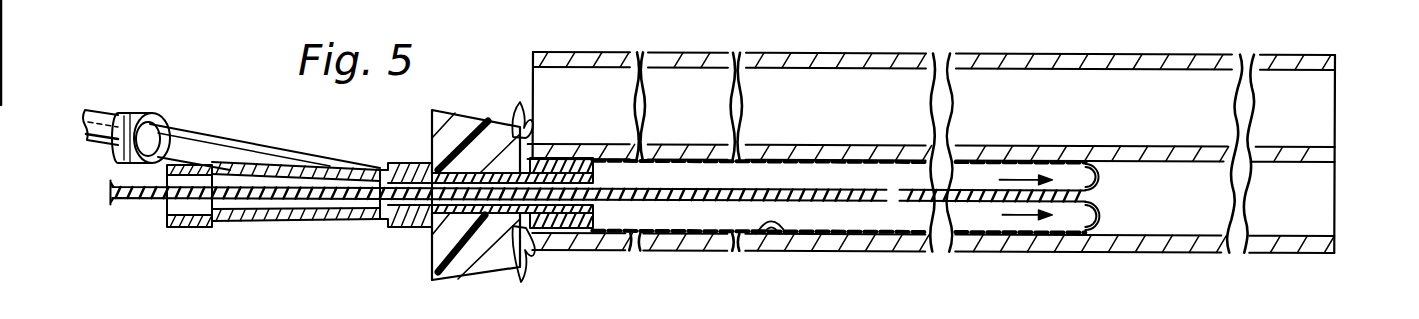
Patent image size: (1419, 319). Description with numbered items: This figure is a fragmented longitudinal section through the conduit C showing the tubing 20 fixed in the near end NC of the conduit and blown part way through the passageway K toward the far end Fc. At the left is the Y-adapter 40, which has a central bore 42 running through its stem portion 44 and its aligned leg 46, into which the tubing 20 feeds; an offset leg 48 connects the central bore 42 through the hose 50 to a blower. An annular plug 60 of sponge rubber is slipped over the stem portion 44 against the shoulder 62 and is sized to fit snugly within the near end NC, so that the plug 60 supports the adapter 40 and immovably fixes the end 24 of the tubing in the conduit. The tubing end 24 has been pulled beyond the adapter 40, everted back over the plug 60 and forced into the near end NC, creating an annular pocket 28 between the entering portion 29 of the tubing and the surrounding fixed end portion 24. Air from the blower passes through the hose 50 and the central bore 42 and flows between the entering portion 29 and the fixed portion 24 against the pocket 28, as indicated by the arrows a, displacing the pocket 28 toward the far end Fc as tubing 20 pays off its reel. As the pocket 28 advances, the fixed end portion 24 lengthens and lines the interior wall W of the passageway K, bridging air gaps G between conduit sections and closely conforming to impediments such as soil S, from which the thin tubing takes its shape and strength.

The tubing 20 is at (138, 200).
The end of the tubing 24 is at (566, 243).
The annular pocket 28 is at (1080, 218).
The entering portion of the tubing 29 is at (835, 204).
The Y-adapter 40 is at (258, 151).
The central bore 42 is at (264, 203).
The stem portion 44 is at (404, 163).
The aligned leg 46 is at (288, 215).
The offset leg 48 is at (206, 97).
The hose 50 is at (107, 107).
The annular plug 60 is at (460, 82).
The shoulder 62 is at (438, 221).
The conduit C is at (1127, 57).
The near end of the conduit NC is at (545, 142).
The passageway K is at (1314, 206).
The far end of the passage Fc is at (1306, 237).
The interior wall of the passageway W is at (692, 244).
The air gaps G is at (735, 246).
The soil S is at (774, 233).
The arrows a is at (1006, 178).